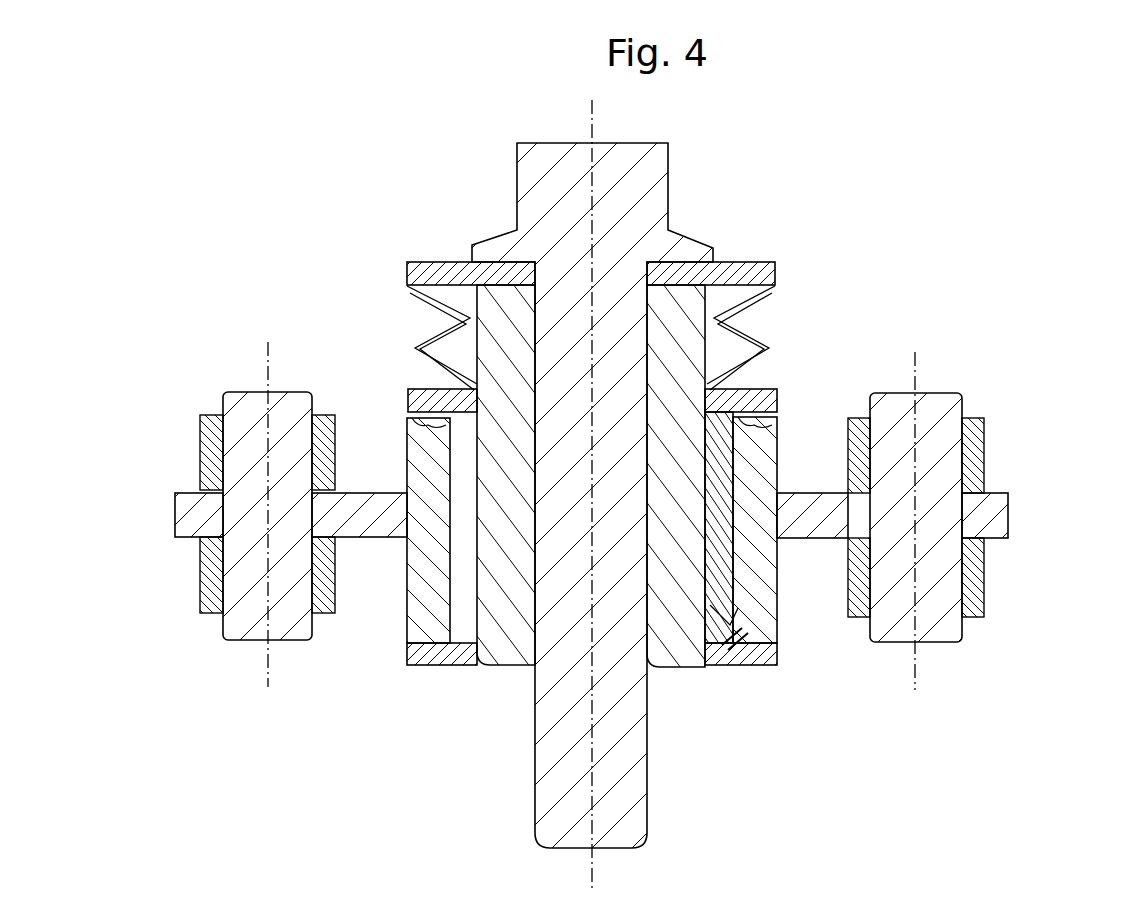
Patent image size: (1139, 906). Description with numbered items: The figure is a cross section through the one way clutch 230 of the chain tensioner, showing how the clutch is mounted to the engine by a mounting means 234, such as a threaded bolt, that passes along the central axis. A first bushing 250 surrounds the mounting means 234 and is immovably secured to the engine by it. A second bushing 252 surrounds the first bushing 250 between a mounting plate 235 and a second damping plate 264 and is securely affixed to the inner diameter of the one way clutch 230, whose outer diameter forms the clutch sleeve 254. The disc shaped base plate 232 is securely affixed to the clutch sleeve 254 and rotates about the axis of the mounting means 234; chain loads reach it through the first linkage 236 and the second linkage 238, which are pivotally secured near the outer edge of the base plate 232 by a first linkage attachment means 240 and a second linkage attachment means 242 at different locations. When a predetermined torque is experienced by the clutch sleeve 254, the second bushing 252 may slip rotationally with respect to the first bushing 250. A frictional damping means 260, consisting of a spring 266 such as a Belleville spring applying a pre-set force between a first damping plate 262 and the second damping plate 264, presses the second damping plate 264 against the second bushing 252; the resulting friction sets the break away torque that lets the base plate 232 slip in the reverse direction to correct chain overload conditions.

The one way clutch 230 is at (837, 233).
The disc shaped base plate 232 is at (195, 508).
The mounting means 234 is at (668, 237).
The mounting plate 235 is at (435, 648).
The first linkage 236 is at (982, 477).
The second linkage 238 is at (213, 462).
The first linkage attachment means 240 is at (922, 397).
The second linkage attachment means 242 is at (253, 405).
The first bushing 250 is at (503, 642).
The second bushing 252 is at (712, 610).
The clutch sleeve 254 is at (765, 590).
The frictional damping means 260 is at (395, 325).
The first damping plate 262 is at (767, 272).
The second damping plate 264 is at (420, 402).
The spring 266 is at (735, 307).